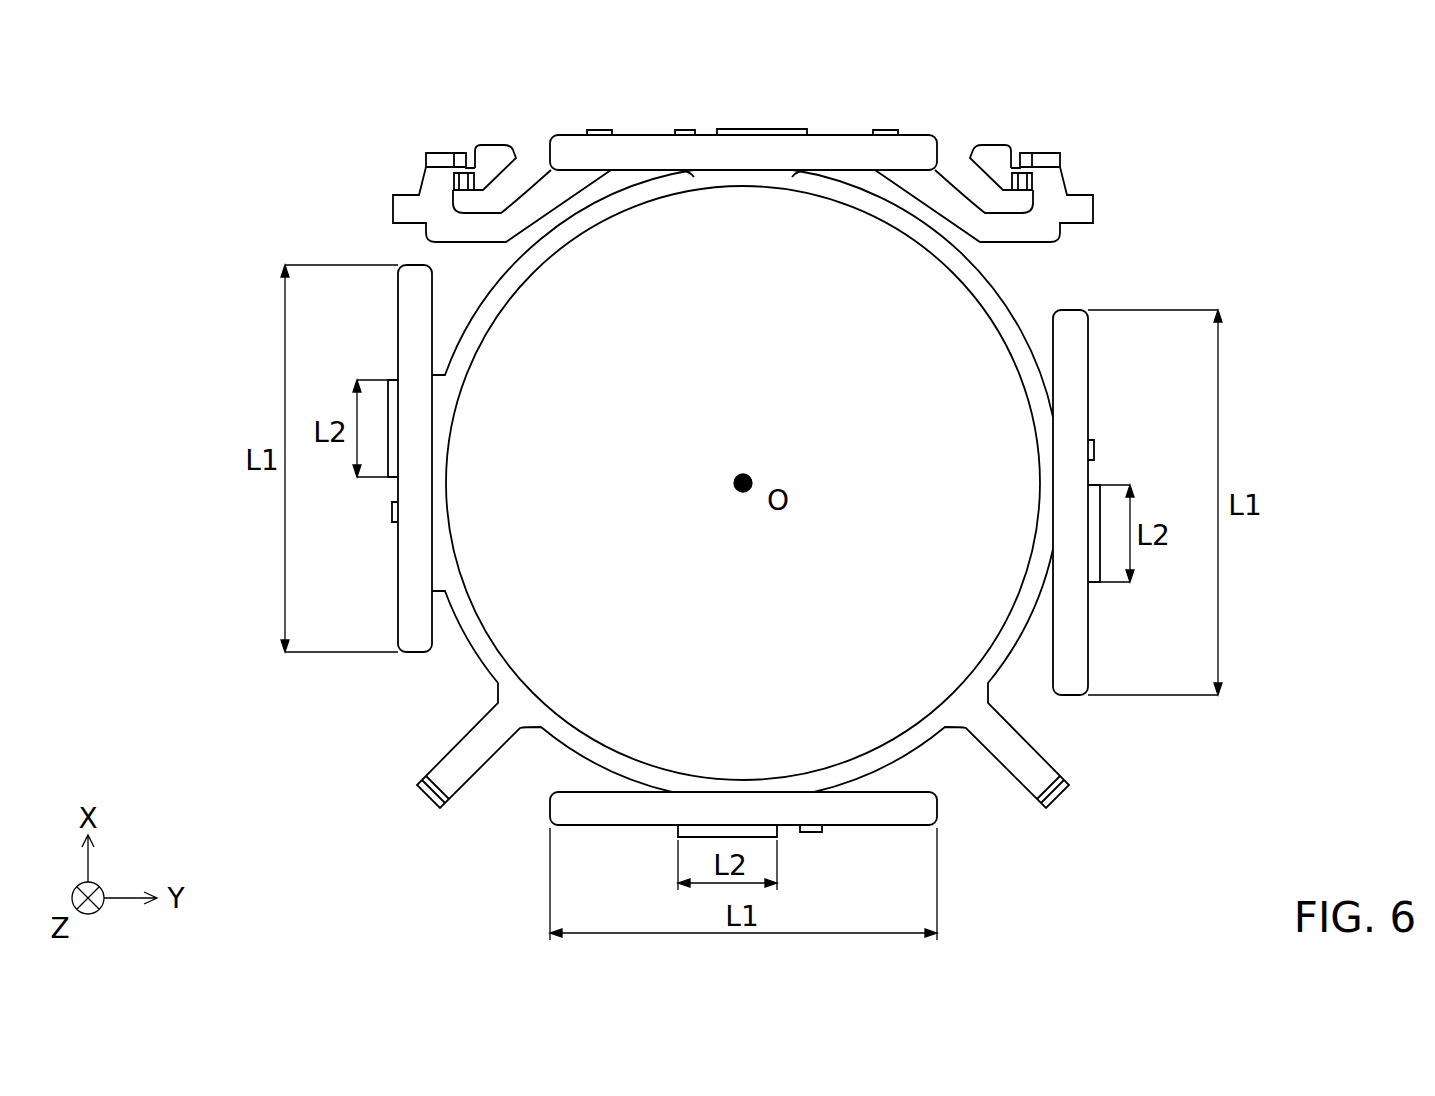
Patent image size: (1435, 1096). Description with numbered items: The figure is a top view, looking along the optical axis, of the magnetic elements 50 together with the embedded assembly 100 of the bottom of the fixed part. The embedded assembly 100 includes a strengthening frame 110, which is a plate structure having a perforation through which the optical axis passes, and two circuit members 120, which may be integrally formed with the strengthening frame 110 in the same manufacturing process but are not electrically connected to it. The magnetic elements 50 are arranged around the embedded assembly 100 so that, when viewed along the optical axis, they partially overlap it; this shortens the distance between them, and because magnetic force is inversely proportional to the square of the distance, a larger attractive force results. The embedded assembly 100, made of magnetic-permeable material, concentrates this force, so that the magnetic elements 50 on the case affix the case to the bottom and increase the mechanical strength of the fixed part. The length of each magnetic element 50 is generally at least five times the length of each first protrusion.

The embedded assembly 100 is at (122, 312).
The strengthening frame 110 is at (596, 489).
The circuit member 120 is at (989, 67).
The magnetic element 50 is at (845, 150).